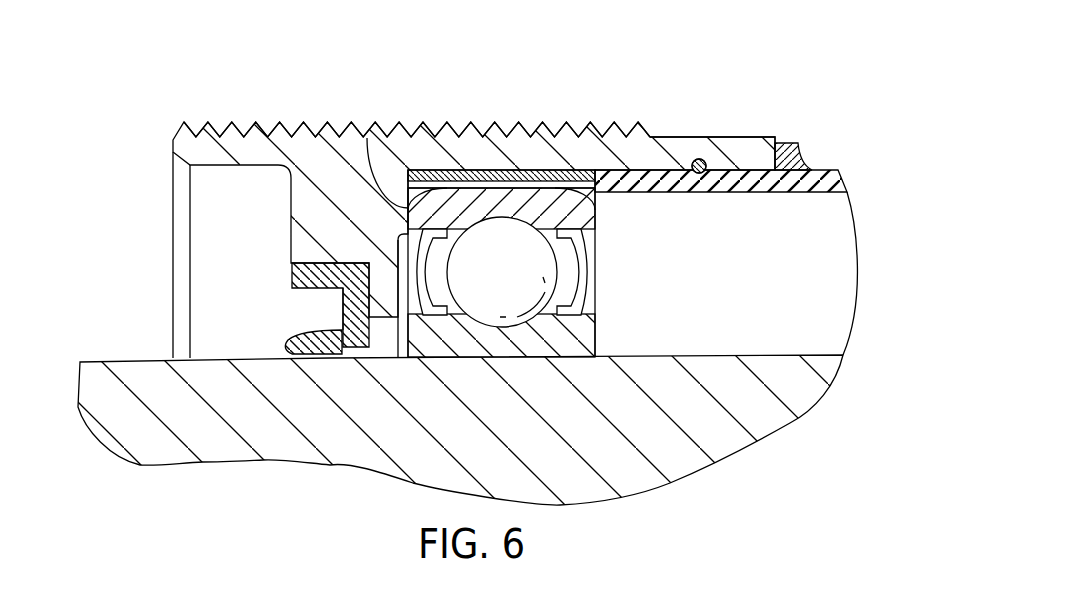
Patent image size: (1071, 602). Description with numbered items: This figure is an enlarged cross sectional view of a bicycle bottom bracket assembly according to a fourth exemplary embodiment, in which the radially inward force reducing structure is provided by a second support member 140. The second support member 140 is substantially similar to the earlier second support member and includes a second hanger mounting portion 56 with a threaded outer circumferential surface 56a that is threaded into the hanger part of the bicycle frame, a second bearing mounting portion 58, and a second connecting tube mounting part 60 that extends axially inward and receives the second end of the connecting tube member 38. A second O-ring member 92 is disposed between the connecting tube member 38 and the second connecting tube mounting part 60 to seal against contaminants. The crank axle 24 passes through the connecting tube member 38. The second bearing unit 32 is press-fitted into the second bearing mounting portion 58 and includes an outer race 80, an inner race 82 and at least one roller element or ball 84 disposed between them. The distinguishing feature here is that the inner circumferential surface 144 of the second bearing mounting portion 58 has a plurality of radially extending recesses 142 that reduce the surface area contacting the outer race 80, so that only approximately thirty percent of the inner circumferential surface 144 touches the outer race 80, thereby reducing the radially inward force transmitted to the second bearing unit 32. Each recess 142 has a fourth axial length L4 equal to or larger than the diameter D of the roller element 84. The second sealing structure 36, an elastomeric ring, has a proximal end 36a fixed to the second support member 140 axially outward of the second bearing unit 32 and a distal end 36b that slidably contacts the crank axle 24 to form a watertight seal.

The crank axle 24 is at (70, 375).
The second bearing unit 32 is at (601, 323).
The second sealing structure 36 is at (343, 307).
The proximal end 36a is at (333, 263).
The distal end 36b is at (287, 342).
The connecting tube member 38 is at (826, 164).
The second hanger mounting portion 56 is at (272, 119).
The threaded outer circumferential surface 56a is at (309, 123).
The second bearing mounting portion 58 is at (521, 164).
The second connecting tube mounting part 60 is at (751, 131).
The outer race 80 is at (598, 222).
The inner race 82 is at (528, 342).
The roller element or ball 84 is at (502, 322).
The second O-ring member 92 is at (699, 159).
The second support member 140 is at (167, 189).
The radially extending recesses 142 is at (367, 138).
The inner circumferential surface 144 is at (600, 208).
The diameter of the roller element D is at (502, 272).
The fourth axial length L4 is at (595, 115).